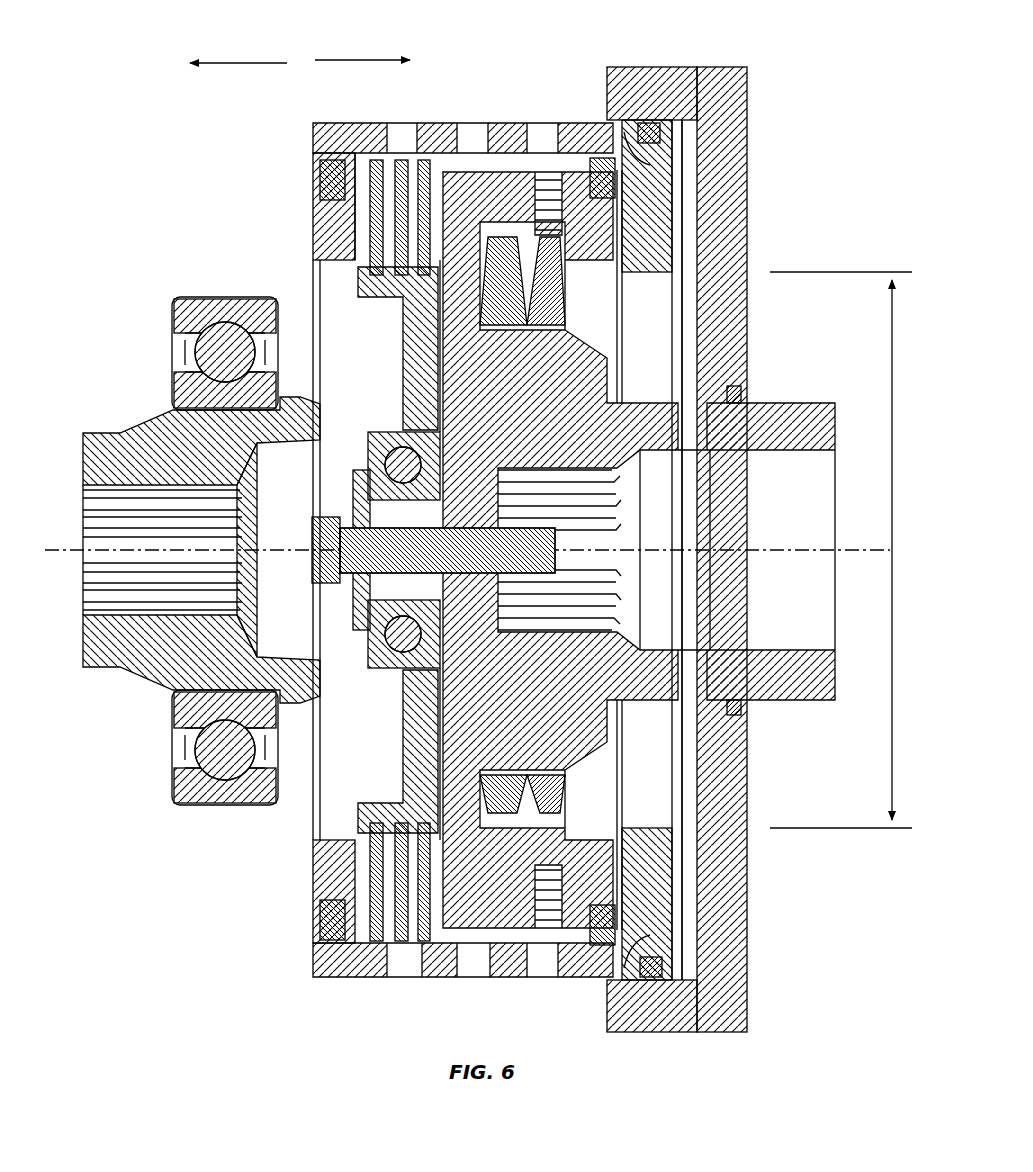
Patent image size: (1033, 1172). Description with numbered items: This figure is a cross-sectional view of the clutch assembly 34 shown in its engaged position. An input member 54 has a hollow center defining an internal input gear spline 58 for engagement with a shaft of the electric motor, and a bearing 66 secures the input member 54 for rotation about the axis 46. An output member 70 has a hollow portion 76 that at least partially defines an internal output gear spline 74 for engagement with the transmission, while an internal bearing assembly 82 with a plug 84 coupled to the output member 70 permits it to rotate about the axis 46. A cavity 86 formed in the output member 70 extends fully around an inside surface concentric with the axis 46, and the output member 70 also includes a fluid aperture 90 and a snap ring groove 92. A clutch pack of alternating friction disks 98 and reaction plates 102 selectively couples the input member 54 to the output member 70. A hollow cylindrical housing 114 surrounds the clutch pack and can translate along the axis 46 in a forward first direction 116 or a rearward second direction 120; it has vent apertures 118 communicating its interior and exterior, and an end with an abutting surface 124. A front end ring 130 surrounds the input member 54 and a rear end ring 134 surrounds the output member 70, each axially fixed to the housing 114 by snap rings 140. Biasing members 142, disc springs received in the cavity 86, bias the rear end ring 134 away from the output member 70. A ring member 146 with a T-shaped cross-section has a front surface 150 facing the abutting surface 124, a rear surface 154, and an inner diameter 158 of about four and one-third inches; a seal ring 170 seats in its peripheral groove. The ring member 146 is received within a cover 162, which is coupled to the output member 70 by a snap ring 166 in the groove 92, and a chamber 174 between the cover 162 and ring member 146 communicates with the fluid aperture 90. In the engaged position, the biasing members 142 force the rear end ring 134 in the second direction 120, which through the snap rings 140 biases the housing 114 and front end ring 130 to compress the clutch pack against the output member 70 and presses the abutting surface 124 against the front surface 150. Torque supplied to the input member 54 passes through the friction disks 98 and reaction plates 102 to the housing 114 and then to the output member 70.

The clutch assembly 34 is at (845, 90).
The axis 46 is at (48, 550).
The input member 54 is at (160, 414).
The internal input gear spline 58 is at (140, 568).
The bearing 66 is at (250, 296).
The output member 70 is at (654, 603).
The internal output gear spline 74 is at (595, 567).
The hollow portion 76 is at (843, 494).
The internal bearing assembly 82 is at (340, 595).
The plug 84 is at (383, 505).
The cavity 86 is at (520, 878).
The fluid aperture 90 is at (678, 408).
The snap ring groove 92 is at (745, 393).
The friction disks 98 is at (372, 940).
The reaction plates 102 is at (388, 950).
The housing 114 is at (312, 143).
The first direction 116 is at (210, 62).
The vent apertures 118 is at (395, 132).
The second direction 120 is at (328, 60).
The abutting surface 124 is at (628, 128).
The front end ring 130 is at (312, 872).
The rear end ring 134 is at (548, 940).
The snap rings 140 is at (322, 930).
The biasing members 142 is at (545, 858).
The ring member 146 is at (686, 125).
The front surface 150 is at (603, 990).
The rear surface 154 is at (692, 992).
The inner diameter 158 is at (851, 550).
The cover 162 is at (749, 178).
The snap ring 166 is at (745, 706).
The seal ring 170 is at (648, 122).
The chamber 174 is at (690, 896).